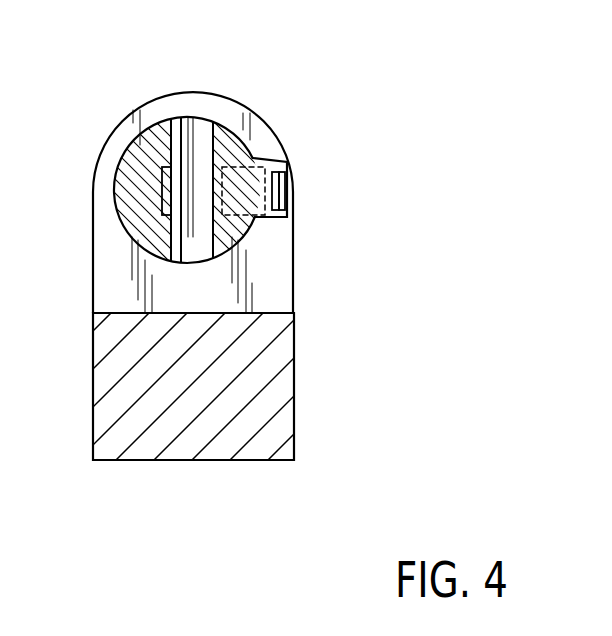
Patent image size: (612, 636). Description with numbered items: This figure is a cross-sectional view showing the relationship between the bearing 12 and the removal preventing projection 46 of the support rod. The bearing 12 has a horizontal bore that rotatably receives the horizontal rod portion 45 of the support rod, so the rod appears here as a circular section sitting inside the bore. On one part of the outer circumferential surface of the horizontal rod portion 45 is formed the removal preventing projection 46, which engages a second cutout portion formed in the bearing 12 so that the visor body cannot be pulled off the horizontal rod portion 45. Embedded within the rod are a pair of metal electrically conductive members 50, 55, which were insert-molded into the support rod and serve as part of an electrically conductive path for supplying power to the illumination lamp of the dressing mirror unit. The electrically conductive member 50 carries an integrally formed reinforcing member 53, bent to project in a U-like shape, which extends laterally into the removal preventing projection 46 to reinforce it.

The bearing 12 is at (243, 102).
The horizontal rod portion 45 is at (272, 252).
The removal preventing projection 46 is at (293, 202).
The electrically conductive member 50 is at (263, 165).
The reinforcing member 53 is at (293, 178).
The electrically conductive member 55 is at (162, 187).